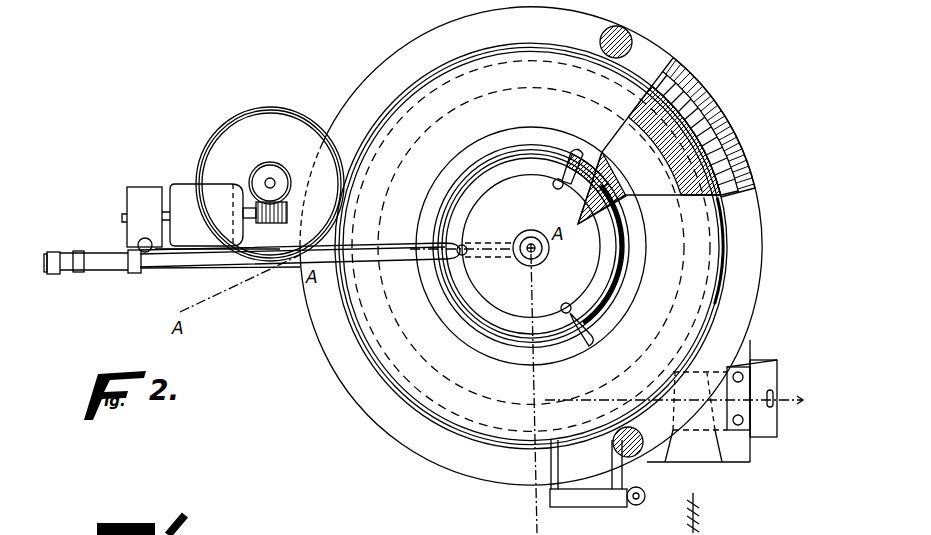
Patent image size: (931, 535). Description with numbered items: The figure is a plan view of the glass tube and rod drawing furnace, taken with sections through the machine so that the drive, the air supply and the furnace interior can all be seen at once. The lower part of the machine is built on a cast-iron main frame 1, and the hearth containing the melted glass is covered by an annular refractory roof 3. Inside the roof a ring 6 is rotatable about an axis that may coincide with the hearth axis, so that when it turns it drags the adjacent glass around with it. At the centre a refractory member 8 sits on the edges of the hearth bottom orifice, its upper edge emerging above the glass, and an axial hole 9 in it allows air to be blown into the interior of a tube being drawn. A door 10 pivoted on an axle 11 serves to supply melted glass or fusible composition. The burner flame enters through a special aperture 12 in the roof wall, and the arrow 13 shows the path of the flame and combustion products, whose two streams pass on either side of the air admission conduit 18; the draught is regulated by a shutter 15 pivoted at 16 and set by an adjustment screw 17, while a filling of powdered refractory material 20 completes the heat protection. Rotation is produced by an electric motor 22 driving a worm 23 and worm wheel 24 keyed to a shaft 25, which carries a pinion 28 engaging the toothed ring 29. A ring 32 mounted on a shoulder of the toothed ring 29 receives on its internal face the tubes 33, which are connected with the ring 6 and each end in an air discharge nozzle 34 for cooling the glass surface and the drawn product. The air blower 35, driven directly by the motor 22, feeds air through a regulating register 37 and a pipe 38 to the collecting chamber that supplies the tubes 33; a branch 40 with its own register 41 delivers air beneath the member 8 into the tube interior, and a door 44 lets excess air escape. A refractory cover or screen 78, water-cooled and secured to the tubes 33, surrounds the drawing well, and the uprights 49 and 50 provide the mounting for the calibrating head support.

The main frame 1 is at (336, 354).
The roof 3 is at (699, 86).
The ring 6 is at (734, 141).
The refractory member 8 is at (532, 240).
The axial hole 9 is at (527, 241).
The door 10 is at (572, 500).
The axle 11 is at (633, 498).
The aperture 12 is at (683, 453).
The arrow 13 is at (690, 438).
The shutter 15 is at (777, 355).
The pivot 16 is at (760, 378).
The adjustment screw 17 is at (771, 398).
The air admission conduit 18 is at (684, 444).
The filling of powdered refractory material 20 is at (755, 187).
The electric motor 22 is at (188, 196).
The worm 23 is at (270, 224).
The worm wheel 24 is at (260, 165).
The shaft 25 is at (270, 179).
The pinion 28 is at (223, 149).
The toothed ring 29 is at (360, 143).
The ring 32 is at (438, 312).
The tubes 33 is at (419, 200).
The air discharge nozzle 34 is at (458, 240).
The air blower 35 is at (142, 196).
The regulating register 37 is at (138, 272).
The pipe 38 is at (168, 265).
The branch 40 is at (100, 259).
The register 41 is at (78, 252).
The door 44 is at (49, 275).
The upright 49 is at (635, 456).
The upright 50 is at (629, 36).
The cover or screen 78 is at (704, 131).